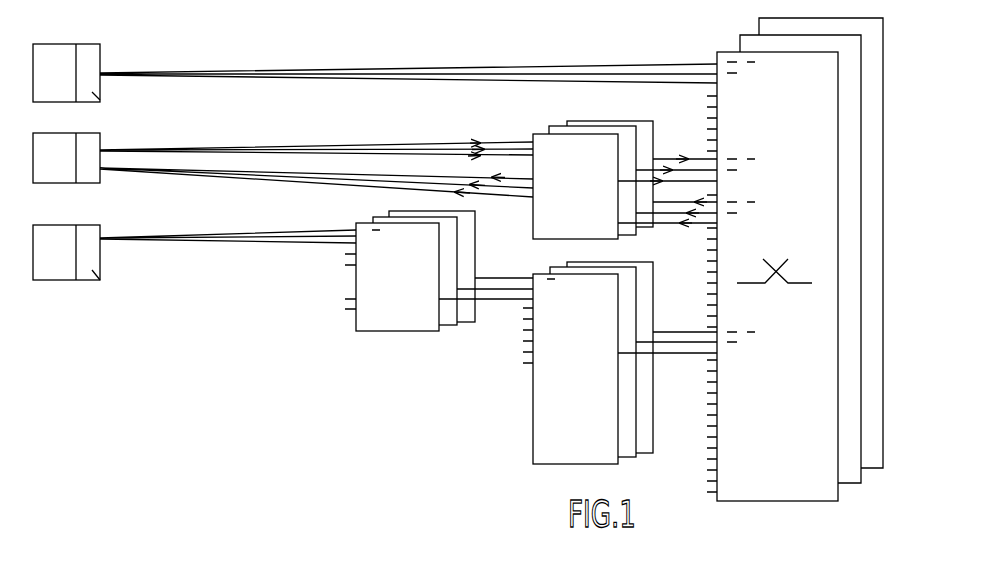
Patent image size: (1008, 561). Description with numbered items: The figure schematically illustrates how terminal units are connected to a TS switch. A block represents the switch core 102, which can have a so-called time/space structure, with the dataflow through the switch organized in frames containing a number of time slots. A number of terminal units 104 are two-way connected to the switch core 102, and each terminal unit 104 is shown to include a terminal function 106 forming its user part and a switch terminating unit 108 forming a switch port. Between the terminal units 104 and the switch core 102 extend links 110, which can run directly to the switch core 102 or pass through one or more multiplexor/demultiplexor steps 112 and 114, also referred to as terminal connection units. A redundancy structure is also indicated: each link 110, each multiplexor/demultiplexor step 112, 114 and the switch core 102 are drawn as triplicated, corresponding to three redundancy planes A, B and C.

The switch core 102 is at (766, 78).
The terminal unit 104 is at (105, 47).
The terminal function 106 is at (62, 53).
The switch terminating unit 108 is at (90, 140).
The link 110 is at (385, 66).
The multiplexor/demultiplexor step 112 is at (527, 128).
The multiplexor/demultiplexor step 114 is at (490, 371).